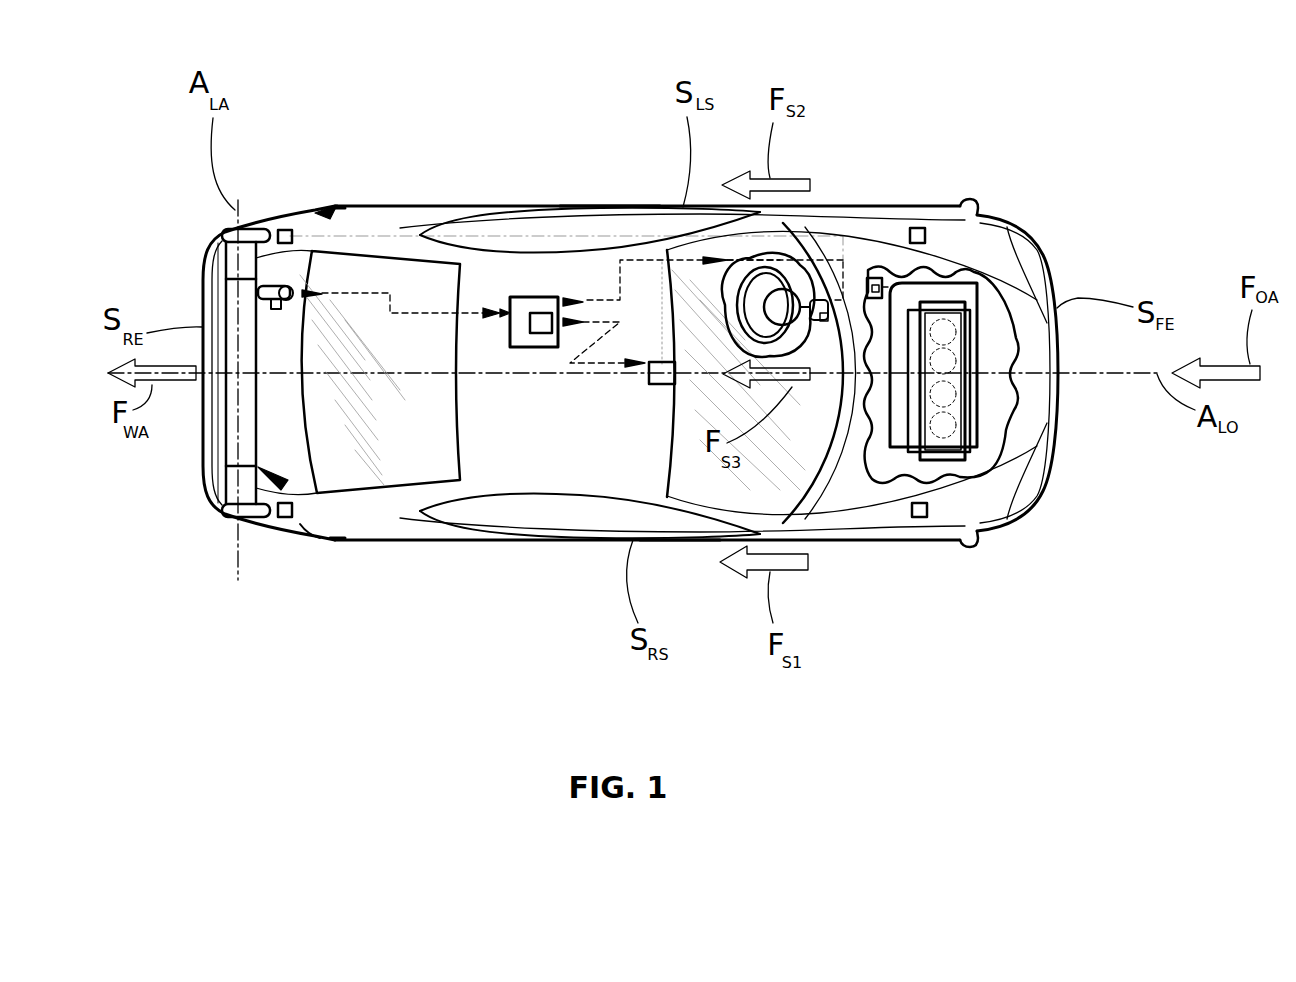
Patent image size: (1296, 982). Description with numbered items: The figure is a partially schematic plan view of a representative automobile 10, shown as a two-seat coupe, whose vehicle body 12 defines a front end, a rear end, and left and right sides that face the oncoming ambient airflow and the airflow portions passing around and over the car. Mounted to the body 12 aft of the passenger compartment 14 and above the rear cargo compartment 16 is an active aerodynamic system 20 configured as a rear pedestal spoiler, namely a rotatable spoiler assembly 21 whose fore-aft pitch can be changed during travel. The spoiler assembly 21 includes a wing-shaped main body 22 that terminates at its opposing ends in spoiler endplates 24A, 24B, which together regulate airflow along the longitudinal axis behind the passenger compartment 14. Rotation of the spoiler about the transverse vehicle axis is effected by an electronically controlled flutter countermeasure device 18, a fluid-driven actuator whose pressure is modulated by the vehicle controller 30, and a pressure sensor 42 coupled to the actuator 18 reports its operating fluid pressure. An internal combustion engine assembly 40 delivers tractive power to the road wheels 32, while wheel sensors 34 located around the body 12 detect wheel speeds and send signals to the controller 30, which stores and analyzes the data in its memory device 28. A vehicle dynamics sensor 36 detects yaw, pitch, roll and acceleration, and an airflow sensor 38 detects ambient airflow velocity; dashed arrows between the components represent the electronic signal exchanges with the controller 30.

The automobile 10 is at (1082, 614).
The vehicle body 12 is at (675, 541).
The passenger compartment 14 is at (610, 226).
The rear cargo compartment 16 is at (320, 205).
The flutter countermeasure device 18 is at (294, 284).
The active aerodynamic system 20 is at (200, 292).
The rotatable spoiler assembly 21 is at (310, 527).
The wing-shaped main body 22 is at (258, 367).
The spoiler endplate 24A is at (227, 230).
The spoiler endplate 24B is at (227, 518).
The memory device 28 is at (541, 313).
The vehicle controller 30 is at (510, 297).
The road wheels 32 is at (337, 207).
The wheel sensors 34 is at (284, 230).
The vehicle dynamics sensor 36 is at (866, 270).
The airflow sensor 38 is at (657, 386).
The internal combustion engine assembly 40 is at (990, 342).
The pressure sensor 42 is at (282, 309).